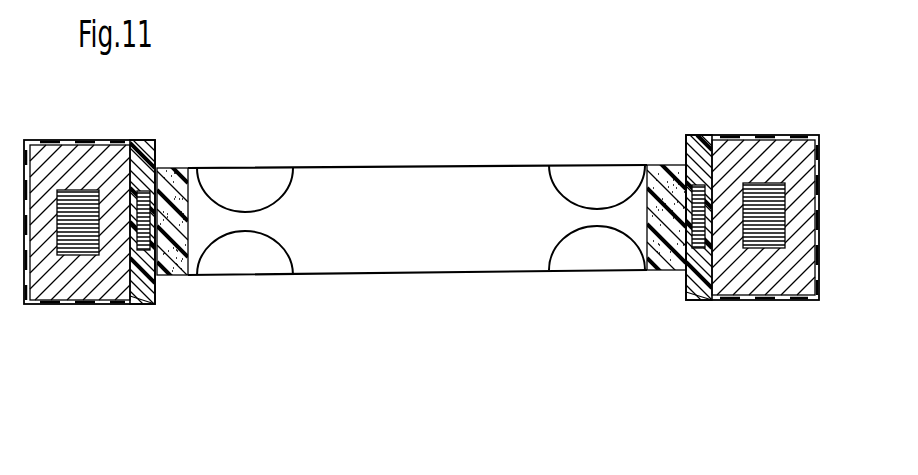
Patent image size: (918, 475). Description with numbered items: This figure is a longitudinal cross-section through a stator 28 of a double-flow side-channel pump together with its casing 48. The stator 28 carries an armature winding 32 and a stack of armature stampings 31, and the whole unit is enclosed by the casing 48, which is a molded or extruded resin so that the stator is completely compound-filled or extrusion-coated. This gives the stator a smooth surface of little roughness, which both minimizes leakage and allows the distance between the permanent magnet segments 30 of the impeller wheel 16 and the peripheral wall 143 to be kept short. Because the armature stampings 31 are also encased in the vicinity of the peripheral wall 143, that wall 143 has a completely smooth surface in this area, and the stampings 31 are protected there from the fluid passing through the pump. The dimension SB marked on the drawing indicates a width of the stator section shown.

The impeller wheel 16 is at (381, 187).
The stator 28 is at (798, 127).
The permanent magnet segments 30 is at (185, 168).
The armature stampings 31 is at (80, 195).
The armature winding 32 is at (751, 150).
The casing 48 is at (155, 303).
The peripheral wall 143 is at (155, 140).
The width dimension S_B SB is at (837, 216).